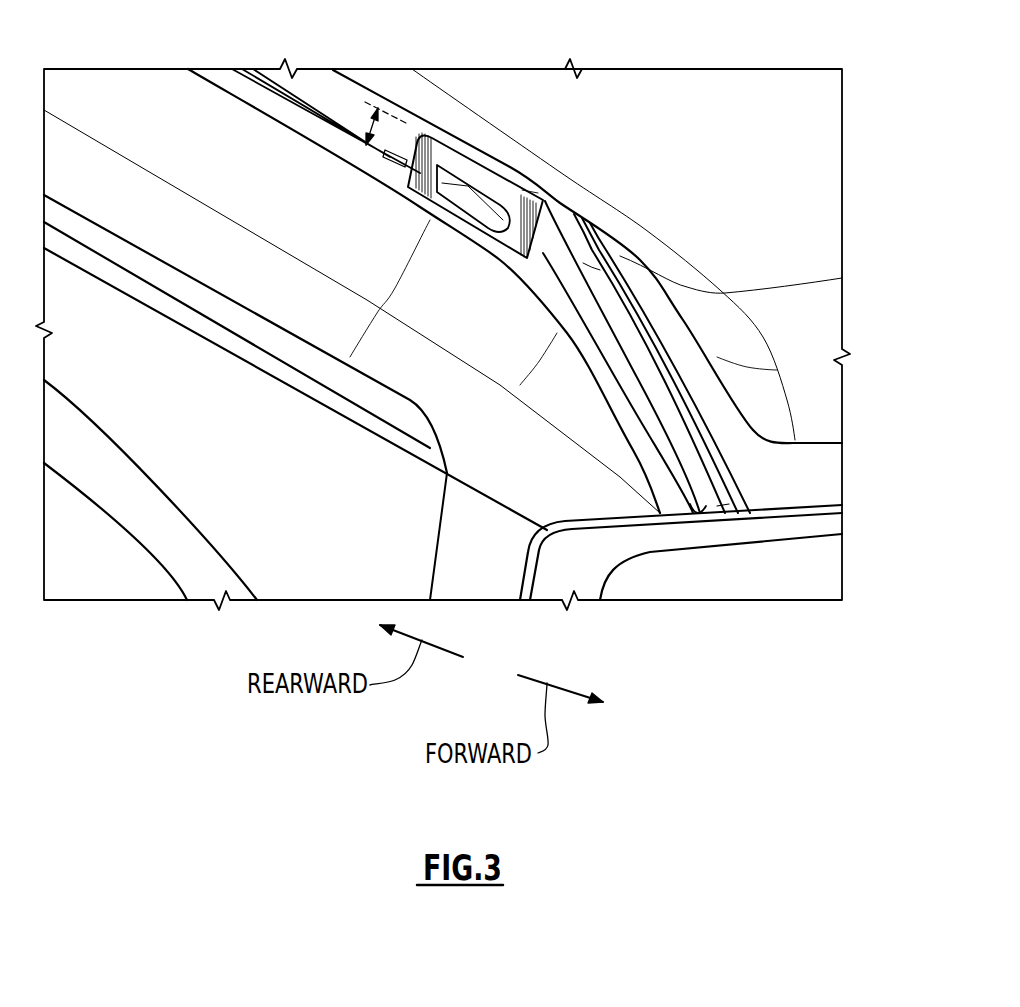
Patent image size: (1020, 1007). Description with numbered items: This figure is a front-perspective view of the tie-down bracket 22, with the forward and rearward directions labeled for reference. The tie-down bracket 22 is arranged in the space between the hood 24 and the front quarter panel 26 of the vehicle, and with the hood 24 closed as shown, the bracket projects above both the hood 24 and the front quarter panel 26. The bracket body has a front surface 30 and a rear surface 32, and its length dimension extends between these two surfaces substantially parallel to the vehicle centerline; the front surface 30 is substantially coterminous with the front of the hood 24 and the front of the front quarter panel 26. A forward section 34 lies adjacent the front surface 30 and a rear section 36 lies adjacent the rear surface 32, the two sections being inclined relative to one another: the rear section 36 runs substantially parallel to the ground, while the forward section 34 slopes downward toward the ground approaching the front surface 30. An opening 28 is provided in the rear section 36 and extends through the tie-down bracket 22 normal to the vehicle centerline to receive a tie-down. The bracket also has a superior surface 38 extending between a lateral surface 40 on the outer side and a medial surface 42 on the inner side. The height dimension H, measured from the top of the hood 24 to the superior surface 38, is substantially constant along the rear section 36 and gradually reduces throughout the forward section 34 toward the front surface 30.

The tie-down bracket 22 is at (618, 214).
The hood 24 is at (812, 325).
The front quarter panel 26 is at (447, 383).
The opening 28 is at (463, 192).
The front surface 30 is at (728, 520).
The rear surface 32 is at (410, 138).
The forward section 34 is at (715, 411).
The rear section 36 is at (512, 166).
The superior surface 38 is at (553, 213).
The lateral surface 40 is at (545, 254).
The medial surface 42 is at (604, 271).
The height dimension H is at (365, 120).